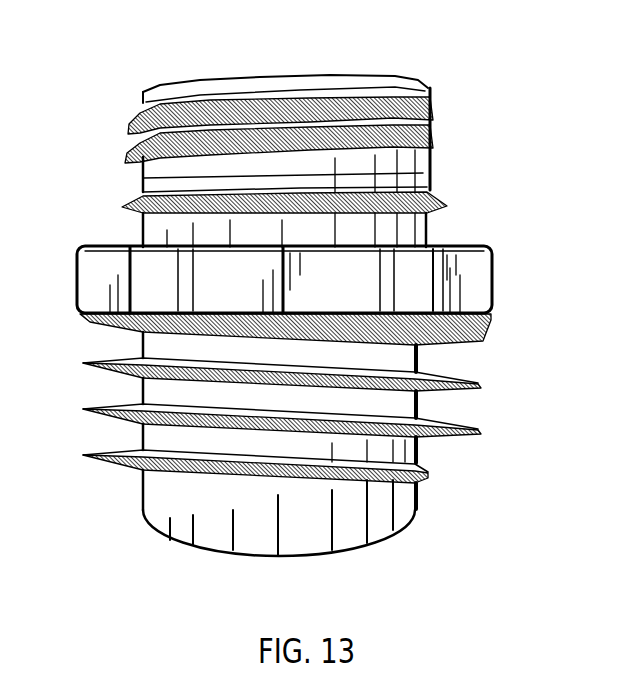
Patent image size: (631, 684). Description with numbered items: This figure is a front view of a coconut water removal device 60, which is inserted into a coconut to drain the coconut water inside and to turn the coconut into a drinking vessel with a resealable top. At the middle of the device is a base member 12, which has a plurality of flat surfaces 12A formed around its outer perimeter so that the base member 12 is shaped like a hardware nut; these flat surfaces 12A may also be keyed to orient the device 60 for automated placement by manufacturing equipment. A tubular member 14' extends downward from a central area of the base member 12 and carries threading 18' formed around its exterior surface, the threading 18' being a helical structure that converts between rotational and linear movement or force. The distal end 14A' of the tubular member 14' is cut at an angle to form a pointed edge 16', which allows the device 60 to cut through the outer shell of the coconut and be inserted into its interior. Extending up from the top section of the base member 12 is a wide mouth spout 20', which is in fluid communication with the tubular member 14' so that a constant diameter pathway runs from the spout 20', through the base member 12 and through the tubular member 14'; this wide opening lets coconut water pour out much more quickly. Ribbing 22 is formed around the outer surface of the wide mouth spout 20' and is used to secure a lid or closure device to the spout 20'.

The coconut water removal device 60 is at (104, 57).
The wide mouth spout 20' is at (306, 149).
The ribbing 22 is at (438, 148).
The base member 12 is at (99, 249).
The flat surfaces 12A is at (496, 289).
The threading 18' is at (246, 360).
The tubular member 14' is at (310, 388).
The distal end 14A' is at (315, 497).
The pointed edge 16' is at (279, 538).